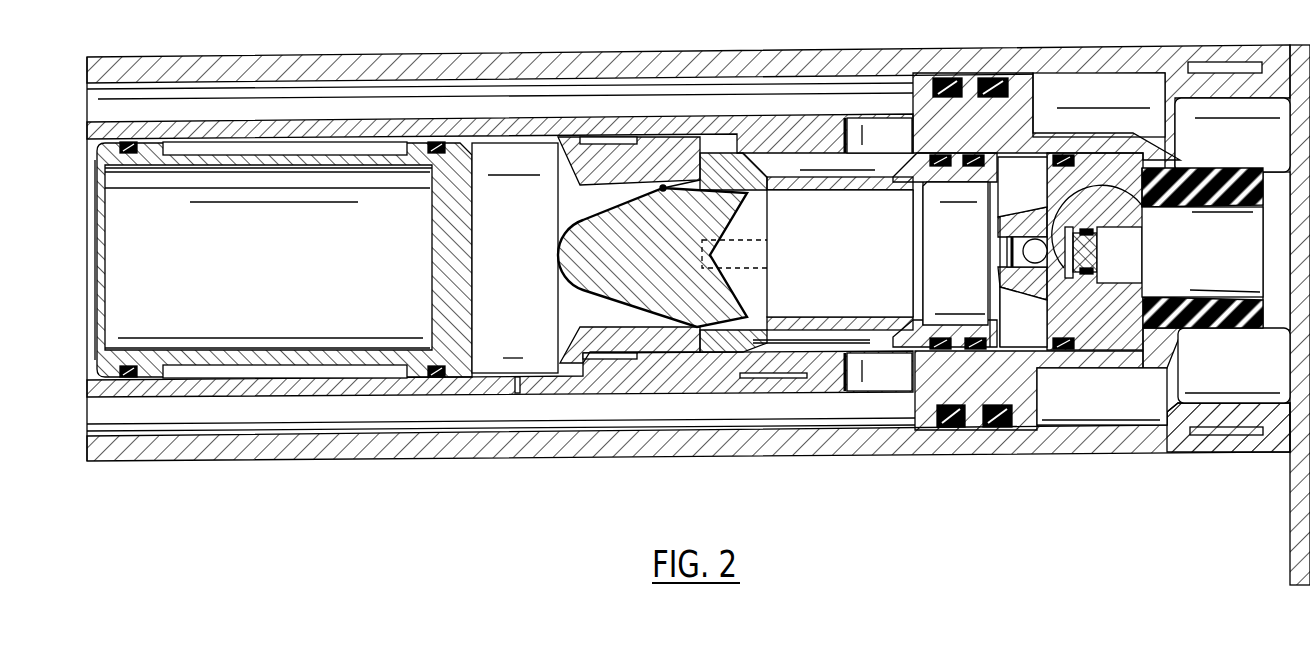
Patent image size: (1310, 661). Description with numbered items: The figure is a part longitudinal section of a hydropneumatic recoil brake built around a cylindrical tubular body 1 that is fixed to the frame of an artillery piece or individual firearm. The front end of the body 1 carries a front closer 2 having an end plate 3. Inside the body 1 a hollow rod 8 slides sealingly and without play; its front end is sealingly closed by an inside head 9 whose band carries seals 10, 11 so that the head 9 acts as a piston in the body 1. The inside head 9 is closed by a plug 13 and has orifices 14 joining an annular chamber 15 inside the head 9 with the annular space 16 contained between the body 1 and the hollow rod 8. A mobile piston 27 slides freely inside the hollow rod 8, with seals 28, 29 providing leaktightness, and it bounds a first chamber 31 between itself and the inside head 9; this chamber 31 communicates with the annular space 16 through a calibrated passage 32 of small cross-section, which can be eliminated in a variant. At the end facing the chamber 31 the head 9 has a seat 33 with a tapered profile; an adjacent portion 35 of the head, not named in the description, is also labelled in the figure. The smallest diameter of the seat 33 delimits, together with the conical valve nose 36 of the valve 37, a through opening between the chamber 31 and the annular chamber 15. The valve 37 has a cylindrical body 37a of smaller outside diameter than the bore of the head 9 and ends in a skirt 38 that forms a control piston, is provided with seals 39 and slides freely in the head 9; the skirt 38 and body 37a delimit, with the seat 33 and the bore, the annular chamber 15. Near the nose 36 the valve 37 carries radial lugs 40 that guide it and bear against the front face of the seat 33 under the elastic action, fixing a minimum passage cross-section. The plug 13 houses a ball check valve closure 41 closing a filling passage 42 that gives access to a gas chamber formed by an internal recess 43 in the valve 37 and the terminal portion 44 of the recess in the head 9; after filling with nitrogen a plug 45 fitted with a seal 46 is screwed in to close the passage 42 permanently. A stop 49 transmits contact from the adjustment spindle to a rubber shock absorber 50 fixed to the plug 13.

The cylindrical tubular body 1 is at (1085, 443).
The front closer 2 is at (1227, 410).
The end plate 3 is at (1300, 315).
The hollow rod 8 is at (308, 385).
The inside head 9 is at (953, 385).
The seal 10 is at (953, 430).
The seal 11 is at (1003, 430).
The plug 13 is at (1117, 317).
The orifices 14 is at (878, 254).
The annular chamber 15 is at (823, 340).
The annular space 16 is at (692, 407).
The mobile piston 27 is at (445, 268).
The seal 28 is at (128, 352).
The seal 29 is at (425, 176).
The first chamber 31 is at (515, 258).
The calibrated passage 32 is at (518, 393).
The seat 33 is at (593, 342).
The upper jaw 35 is at (648, 190).
The valve nose 36 is at (664, 253).
The valve 37 is at (810, 172).
The cylindrical body 37a is at (840, 217).
The skirt 38 is at (958, 332).
The seals 39 is at (970, 152).
The radial lugs 40 is at (753, 193).
The ball check valve closure 41 is at (1025, 248).
The filling passage 42 is at (1047, 297).
The internal recess 43 is at (840, 253).
The terminal portion 44 is at (1022, 187).
The plug 45 is at (1112, 257).
The seal 46 is at (1147, 207).
The stop 49 is at (1280, 190).
The shock absorber 50 is at (1210, 180).